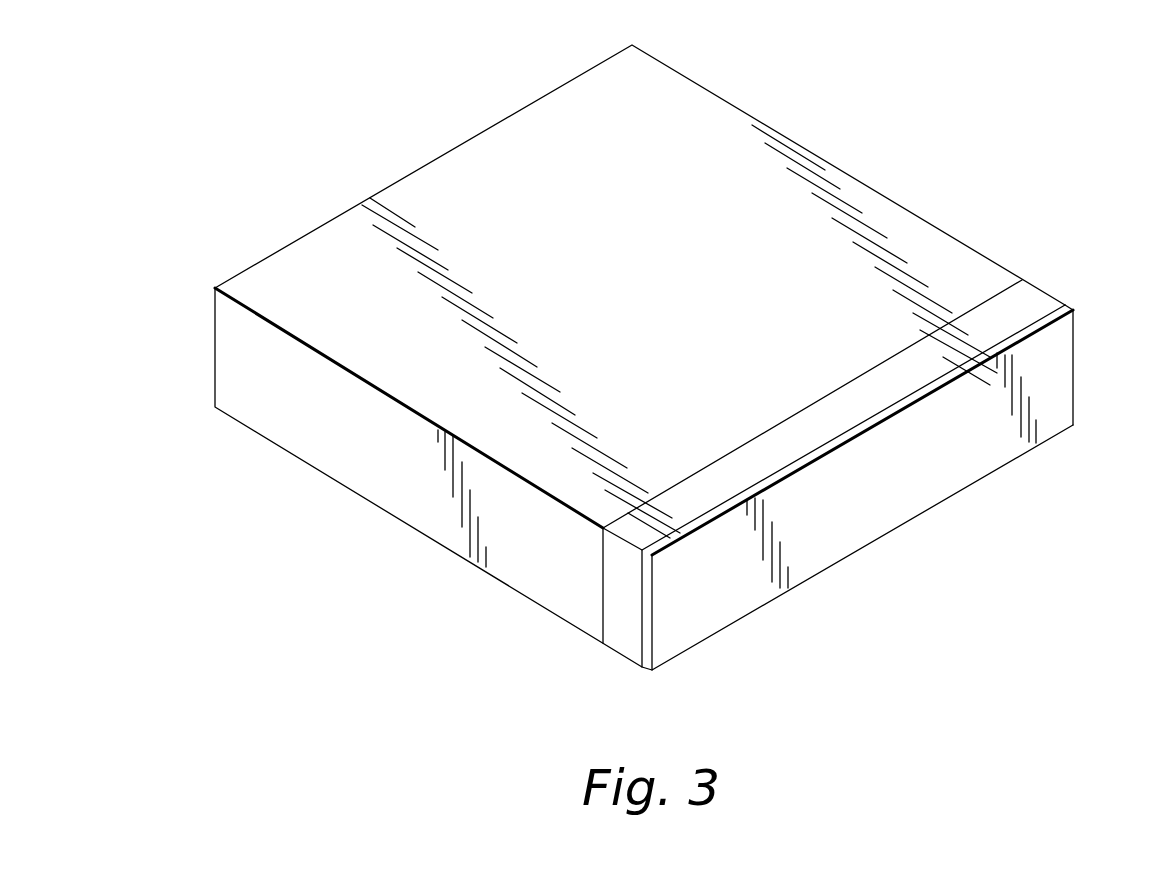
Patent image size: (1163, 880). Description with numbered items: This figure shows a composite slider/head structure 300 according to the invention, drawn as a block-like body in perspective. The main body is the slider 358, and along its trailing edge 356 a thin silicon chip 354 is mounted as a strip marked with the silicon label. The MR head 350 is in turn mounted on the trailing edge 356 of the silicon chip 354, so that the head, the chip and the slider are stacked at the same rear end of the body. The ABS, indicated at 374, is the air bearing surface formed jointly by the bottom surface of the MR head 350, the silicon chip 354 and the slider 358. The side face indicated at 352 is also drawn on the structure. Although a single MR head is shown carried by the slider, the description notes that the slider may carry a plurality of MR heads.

The composite slider/head structure 300 is at (878, 145).
The MR head 350 is at (866, 540).
The side edge face 352 is at (1073, 373).
The silicon chip 354 is at (1047, 294).
The trailing edge 356 is at (603, 593).
The slider 358 is at (680, 303).
The air bearing surface (ABS) 374 is at (318, 470).